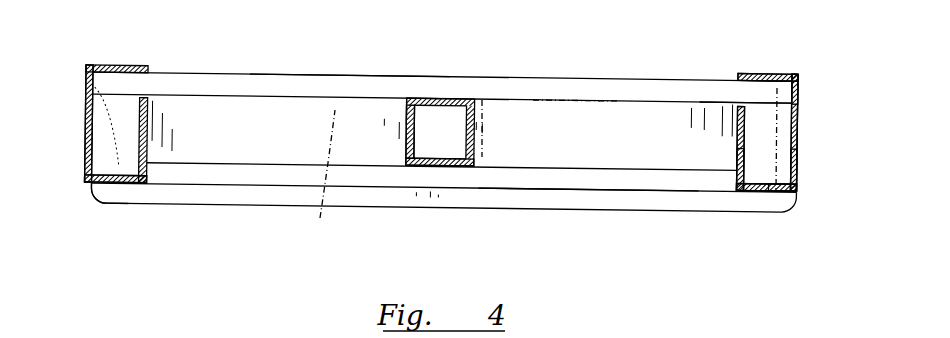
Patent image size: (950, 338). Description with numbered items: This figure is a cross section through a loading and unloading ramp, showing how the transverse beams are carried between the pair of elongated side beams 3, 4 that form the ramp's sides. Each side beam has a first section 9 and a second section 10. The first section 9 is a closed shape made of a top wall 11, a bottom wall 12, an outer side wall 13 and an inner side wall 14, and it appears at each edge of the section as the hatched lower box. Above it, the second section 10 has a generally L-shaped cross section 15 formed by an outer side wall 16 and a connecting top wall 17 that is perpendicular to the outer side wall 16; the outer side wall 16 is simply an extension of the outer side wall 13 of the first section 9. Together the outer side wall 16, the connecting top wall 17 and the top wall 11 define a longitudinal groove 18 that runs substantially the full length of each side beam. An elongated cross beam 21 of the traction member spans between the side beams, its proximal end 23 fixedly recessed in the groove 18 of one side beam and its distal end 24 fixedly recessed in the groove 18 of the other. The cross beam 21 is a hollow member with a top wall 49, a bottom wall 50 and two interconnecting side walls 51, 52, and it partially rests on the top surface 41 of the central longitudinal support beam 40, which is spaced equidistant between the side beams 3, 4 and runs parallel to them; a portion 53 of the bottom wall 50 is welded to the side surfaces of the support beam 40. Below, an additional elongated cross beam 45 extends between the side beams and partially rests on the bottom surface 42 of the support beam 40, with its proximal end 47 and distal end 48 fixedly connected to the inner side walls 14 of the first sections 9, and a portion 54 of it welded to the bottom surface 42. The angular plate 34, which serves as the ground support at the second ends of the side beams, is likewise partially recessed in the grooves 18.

The elongated side beam 3 is at (798, 147).
The elongated side beam 4 is at (87, 155).
The first section 9 is at (797, 183).
The second section 10 is at (798, 85).
The top wall 11 is at (767, 92).
The bottom wall 12 is at (753, 185).
The outer side wall 13 is at (800, 162).
The inner side wall 14 is at (735, 158).
The L-shaped cross section 15 is at (793, 75).
The outer side wall 16 is at (800, 97).
The connecting top wall 17 is at (760, 74).
The longitudinal groove 18 is at (123, 82).
The elongated cross beam 21 is at (248, 85).
The proximal end 23 is at (777, 88).
The distal end 24 is at (100, 65).
The angular plate 34 is at (262, 193).
The central longitudinal support beam 40 is at (407, 135).
The top surface 41 is at (457, 98).
The bottom surface 42 is at (447, 167).
The additional elongated cross beam 45 is at (582, 192).
The proximal end 47 is at (733, 178).
The distal end 48 is at (152, 177).
The top wall 49 is at (303, 75).
The bottom wall 50 is at (405, 98).
The side wall 51 is at (782, 193).
The side wall 52 is at (110, 188).
The welded portion 53 is at (533, 100).
The welded portion 54 is at (484, 157).